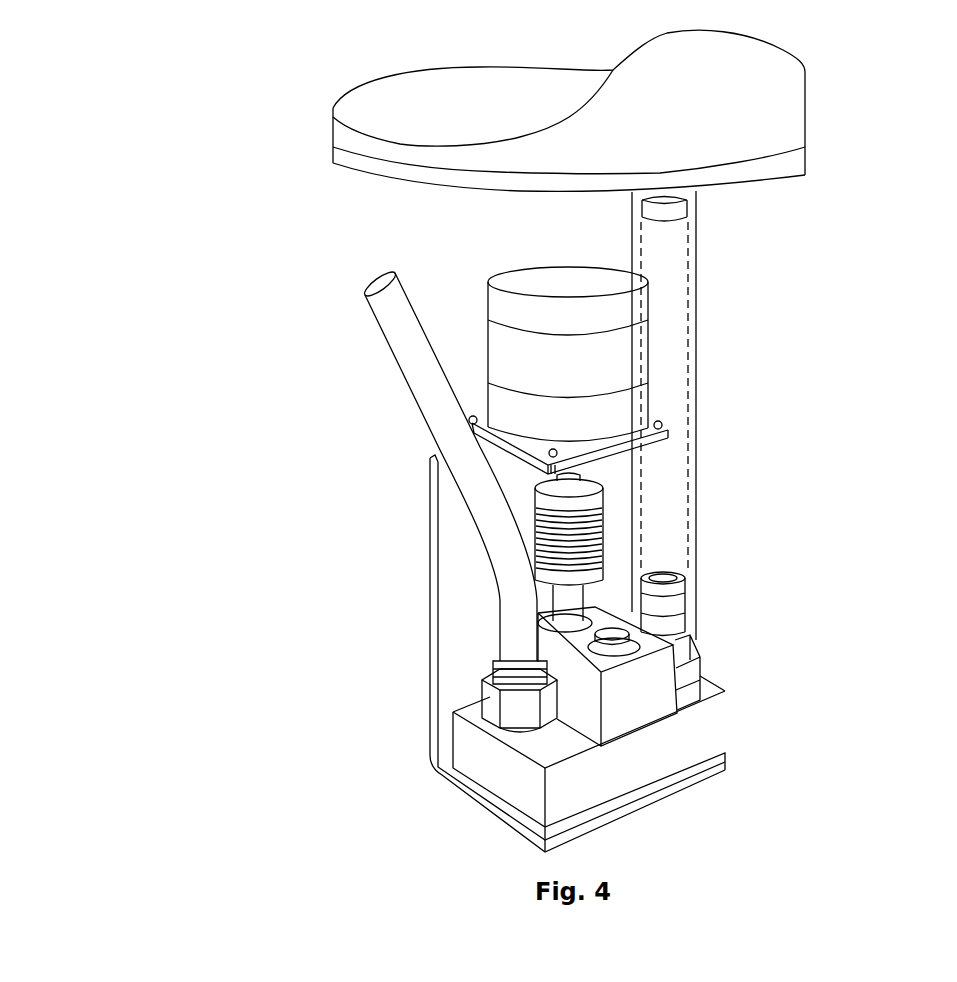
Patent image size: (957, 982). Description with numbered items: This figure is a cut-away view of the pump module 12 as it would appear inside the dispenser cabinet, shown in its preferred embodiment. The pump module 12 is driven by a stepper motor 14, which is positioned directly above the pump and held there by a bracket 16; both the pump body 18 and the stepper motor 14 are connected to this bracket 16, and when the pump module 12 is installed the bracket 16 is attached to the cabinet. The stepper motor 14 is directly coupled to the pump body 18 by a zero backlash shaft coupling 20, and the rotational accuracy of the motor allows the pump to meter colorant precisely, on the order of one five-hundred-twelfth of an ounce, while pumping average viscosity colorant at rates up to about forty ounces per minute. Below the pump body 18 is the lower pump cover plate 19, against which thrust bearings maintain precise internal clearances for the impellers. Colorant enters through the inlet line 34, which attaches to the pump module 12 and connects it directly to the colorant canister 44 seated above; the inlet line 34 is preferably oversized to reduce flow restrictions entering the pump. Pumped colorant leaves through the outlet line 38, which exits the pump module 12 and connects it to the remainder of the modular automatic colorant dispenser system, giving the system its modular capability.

The pump module 12 is at (368, 692).
The stepper motor 14 is at (520, 280).
The bracket 16 is at (458, 612).
The pump body 18 is at (702, 695).
The lower pump cover plate 19 is at (713, 757).
The zero backlash shaft coupling 20 is at (585, 502).
The inlet line 34 is at (680, 378).
The outlet line 38 is at (433, 392).
The colorant canister 44 is at (648, 133).